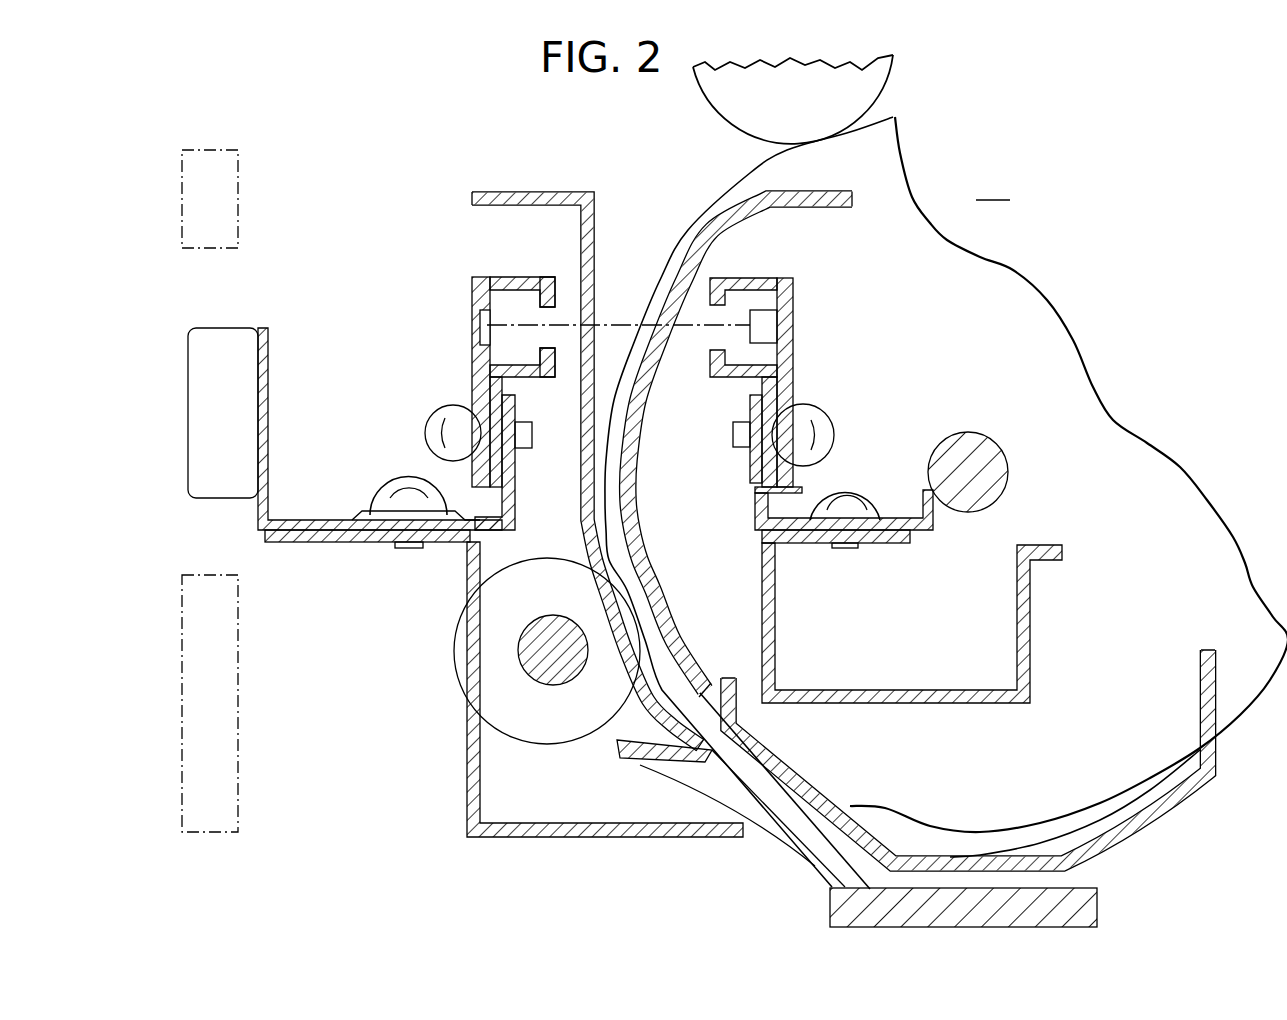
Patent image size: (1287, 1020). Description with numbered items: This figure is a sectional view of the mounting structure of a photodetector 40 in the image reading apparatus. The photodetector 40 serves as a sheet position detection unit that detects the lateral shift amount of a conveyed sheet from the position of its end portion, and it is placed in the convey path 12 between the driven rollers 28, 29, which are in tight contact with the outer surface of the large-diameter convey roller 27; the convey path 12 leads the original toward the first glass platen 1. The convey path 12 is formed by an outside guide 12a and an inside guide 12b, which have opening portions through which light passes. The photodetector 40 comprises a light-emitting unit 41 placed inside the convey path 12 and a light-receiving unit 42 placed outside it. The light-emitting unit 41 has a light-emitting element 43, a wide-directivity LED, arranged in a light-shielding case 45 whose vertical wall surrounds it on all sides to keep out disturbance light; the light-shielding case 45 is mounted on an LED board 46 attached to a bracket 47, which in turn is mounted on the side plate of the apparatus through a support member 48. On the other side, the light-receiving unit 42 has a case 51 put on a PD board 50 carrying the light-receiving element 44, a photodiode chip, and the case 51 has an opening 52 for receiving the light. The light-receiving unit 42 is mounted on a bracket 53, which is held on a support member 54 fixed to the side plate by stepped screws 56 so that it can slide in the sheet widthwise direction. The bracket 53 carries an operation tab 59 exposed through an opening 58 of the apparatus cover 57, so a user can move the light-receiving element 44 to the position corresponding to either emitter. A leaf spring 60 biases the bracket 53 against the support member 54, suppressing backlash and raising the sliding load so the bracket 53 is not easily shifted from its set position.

The first glass platen 1 is at (1095, 905).
The convey path 12 is at (662, 439).
The outside guide 12a is at (588, 205).
The inside guide 12b is at (737, 212).
The convey roller 27 is at (878, 155).
The driven roller 28 is at (880, 90).
The driven roller 29 is at (550, 735).
The photodetector 40 is at (860, 270).
The light-emitting unit 41 is at (780, 272).
The light-receiving unit 42 is at (518, 278).
The light-emitting element 43 is at (768, 325).
The light-receiving element 44 is at (482, 322).
The light-shielding case 45 is at (718, 377).
The LED board 46 is at (785, 375).
The bracket 47 is at (905, 518).
The support member 48 is at (915, 695).
The PD board 50 is at (482, 378).
The case 51 is at (555, 292).
The opening 52 is at (552, 350).
The bracket 53 is at (303, 520).
The support member 54 is at (325, 542).
The stepped screw 56 is at (408, 478).
The apparatus cover 57 is at (200, 215).
The opening 58 is at (200, 543).
The operation tab 59 is at (200, 405).
The leaf spring 60 is at (358, 515).